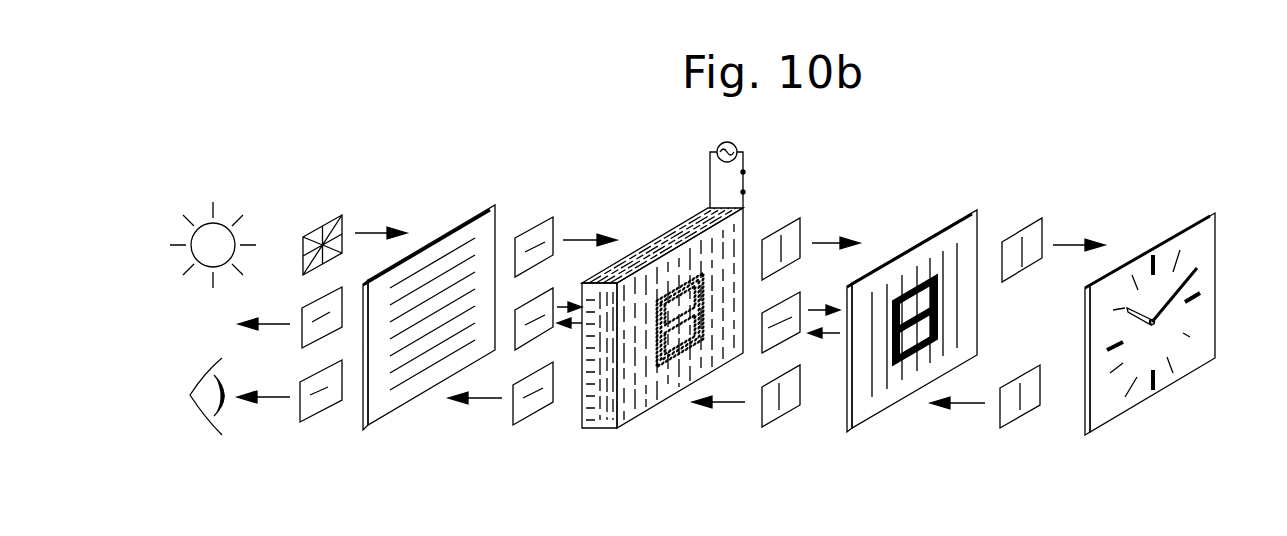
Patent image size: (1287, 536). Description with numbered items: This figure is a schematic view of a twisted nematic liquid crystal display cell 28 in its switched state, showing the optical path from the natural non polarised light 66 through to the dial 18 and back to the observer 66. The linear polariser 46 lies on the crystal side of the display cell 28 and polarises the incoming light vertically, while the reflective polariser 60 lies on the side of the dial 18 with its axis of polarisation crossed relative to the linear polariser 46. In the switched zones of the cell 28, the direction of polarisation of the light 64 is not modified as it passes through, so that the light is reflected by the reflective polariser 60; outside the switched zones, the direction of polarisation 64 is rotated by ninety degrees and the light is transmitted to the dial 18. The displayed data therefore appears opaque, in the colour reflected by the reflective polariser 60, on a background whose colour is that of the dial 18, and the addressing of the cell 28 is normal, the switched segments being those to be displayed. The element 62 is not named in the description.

The dial 18 is at (1215, 213).
The display cell 28 is at (707, 222).
The linear polariser 46 is at (495, 205).
The reflective polariser 60 is at (977, 210).
The light scattering plate 62 is at (333, 215).
The direction of polarisation of the light 64 is at (553, 217).
The observer 66 is at (213, 378).